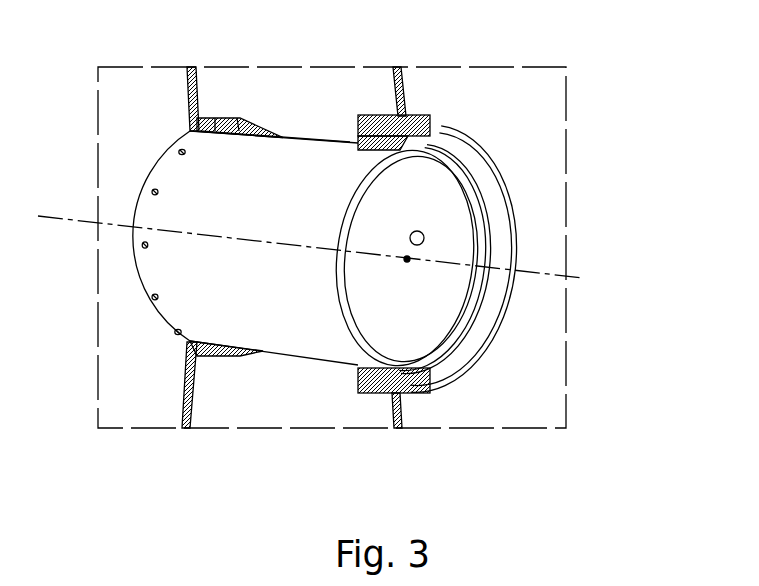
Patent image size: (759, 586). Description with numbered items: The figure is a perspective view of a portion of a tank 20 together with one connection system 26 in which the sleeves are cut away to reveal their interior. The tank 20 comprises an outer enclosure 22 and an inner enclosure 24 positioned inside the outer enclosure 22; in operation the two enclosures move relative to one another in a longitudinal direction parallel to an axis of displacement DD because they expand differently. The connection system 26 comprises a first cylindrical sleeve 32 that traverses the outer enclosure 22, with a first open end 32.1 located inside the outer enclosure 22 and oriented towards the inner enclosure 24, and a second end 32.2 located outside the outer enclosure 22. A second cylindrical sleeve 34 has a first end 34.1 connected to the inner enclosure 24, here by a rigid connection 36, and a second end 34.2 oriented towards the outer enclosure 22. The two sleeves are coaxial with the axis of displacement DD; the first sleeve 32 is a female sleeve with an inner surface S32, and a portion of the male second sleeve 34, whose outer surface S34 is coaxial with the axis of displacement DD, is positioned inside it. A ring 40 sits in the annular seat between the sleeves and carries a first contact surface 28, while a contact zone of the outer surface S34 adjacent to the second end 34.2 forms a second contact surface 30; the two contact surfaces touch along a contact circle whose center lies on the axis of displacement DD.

The tank 20 is at (616, 77).
The outer enclosure 22 is at (420, 58).
The inner enclosure 24 is at (170, 80).
The connection system 26 is at (292, 34).
The first contact surface 28 is at (392, 167).
The second contact surface 30 is at (339, 141).
The first cylindrical sleeve 32 is at (371, 418).
The first open end 32.1 is at (358, 380).
The second end 32.2 is at (445, 390).
The second cylindrical sleeve 34 is at (269, 345).
The first end 34.1 is at (163, 162).
The second end 34.2 is at (480, 292).
The rigid connection 36 is at (218, 102).
The ring 40 is at (383, 116).
The inner surface S32 is at (400, 343).
The outer surface S34 is at (300, 362).
The axis of displacement DD is at (60, 219).